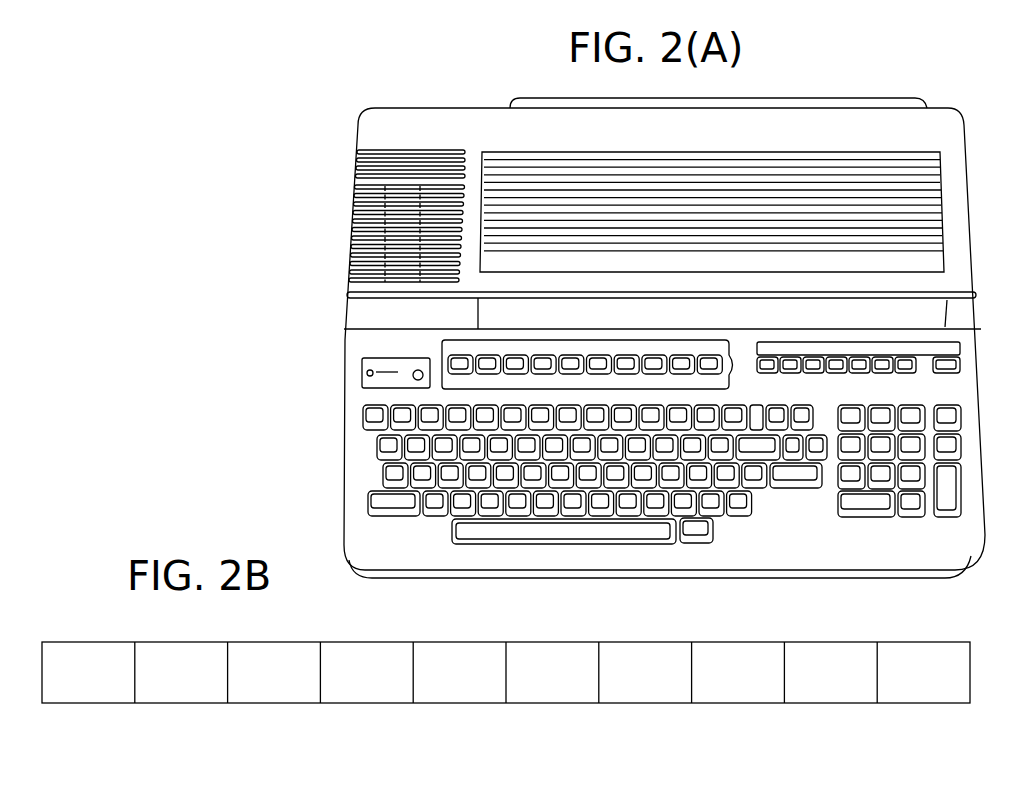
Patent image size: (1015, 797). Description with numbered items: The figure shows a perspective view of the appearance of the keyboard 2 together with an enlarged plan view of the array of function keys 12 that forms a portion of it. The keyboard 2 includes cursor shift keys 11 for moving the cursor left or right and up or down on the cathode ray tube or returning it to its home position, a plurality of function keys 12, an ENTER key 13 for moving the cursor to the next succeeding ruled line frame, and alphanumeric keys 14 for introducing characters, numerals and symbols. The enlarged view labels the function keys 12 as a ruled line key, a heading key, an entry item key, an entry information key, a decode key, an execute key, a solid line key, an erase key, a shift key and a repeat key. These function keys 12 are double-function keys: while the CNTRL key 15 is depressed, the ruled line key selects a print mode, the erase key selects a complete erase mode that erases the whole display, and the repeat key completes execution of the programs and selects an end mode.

In FIG. 2A, the keyboard 2 is at (935, 106).
In FIG. 2A, the cursor shift keys 11 is at (823, 490).
In FIG. 2A, the function keys 12 is at (597, 349).
In FIG. 2B, the function keys 12 is at (549, 639).
In FIG. 2A, the ENTER key 13 is at (790, 488).
In FIG. 2A, the alphanumeric keys 14 is at (437, 516).
In FIG. 2A, the CNTRL key 15 is at (378, 462).